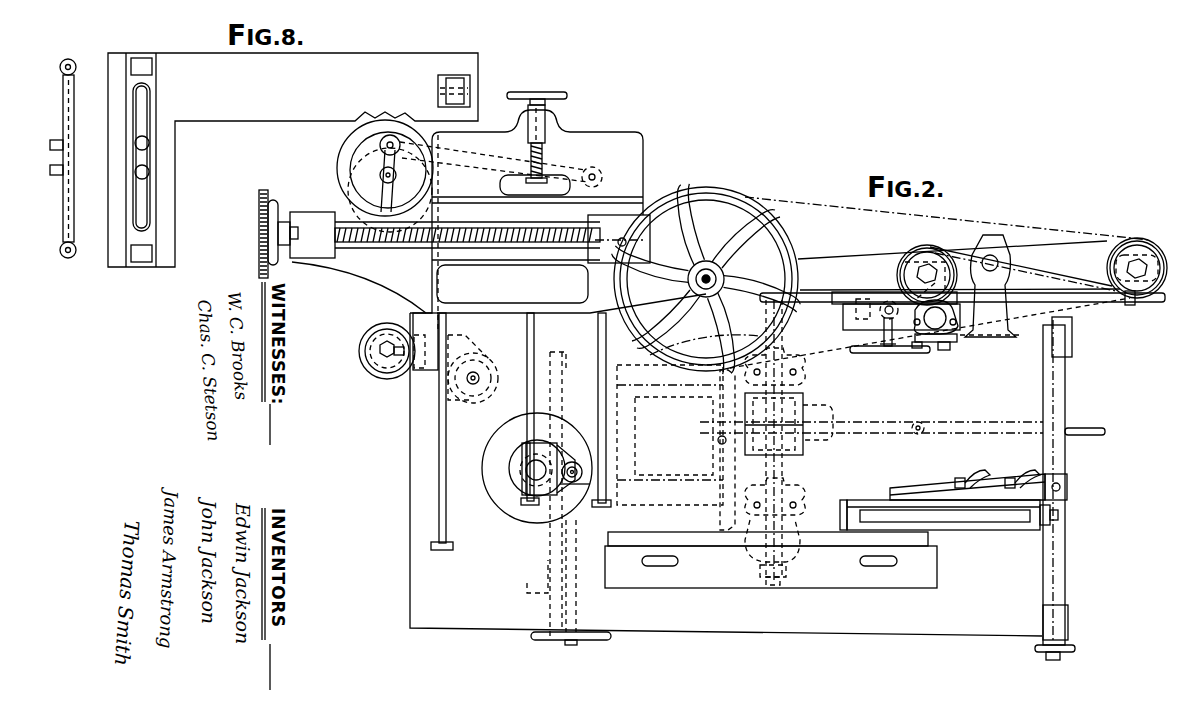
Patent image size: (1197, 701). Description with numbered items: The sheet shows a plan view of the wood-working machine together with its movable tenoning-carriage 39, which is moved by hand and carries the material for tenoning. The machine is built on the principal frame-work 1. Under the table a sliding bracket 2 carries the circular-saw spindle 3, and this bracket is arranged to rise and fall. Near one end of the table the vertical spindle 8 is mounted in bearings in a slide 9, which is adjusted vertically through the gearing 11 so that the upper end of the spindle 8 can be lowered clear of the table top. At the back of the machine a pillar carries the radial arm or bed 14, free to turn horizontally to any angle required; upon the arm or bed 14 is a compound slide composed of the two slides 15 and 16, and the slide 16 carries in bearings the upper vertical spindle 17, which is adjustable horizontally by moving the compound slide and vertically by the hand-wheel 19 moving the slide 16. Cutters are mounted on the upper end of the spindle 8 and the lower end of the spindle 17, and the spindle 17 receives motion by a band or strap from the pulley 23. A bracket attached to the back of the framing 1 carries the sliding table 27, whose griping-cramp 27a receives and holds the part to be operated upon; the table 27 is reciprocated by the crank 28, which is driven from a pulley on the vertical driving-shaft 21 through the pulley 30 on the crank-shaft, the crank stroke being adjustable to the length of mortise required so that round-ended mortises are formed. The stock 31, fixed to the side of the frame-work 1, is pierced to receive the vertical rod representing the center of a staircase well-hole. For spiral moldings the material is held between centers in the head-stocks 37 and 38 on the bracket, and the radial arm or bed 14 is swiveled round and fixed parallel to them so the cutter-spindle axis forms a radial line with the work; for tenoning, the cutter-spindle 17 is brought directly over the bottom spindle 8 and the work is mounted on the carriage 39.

In FIG. 2, the principal frame-work 1 is at (836, 529).
In FIG. 2, the sliding bracket 2 is at (783, 494).
In FIG. 2, the circular-saw spindle 3 is at (789, 434).
In FIG. 2, the vertical spindle 8 is at (536, 470).
In FIG. 2, the slide 9 is at (537, 468).
In FIG. 2, the gearing 11 is at (578, 473).
In FIG. 2, the radial arm or bed 14 is at (947, 282).
In FIG. 2, the slide 15 is at (894, 297).
In FIG. 2, the slide 16 is at (901, 314).
In FIG. 2, the vertical spindle 17 is at (935, 330).
In FIG. 2, the hand-wheel 19 is at (890, 344).
In FIG. 2, the vertical driving-shaft 21 is at (706, 279).
In FIG. 2, the pulley 23 is at (706, 279).
In FIG. 2, the sliding table 27 is at (521, 220).
In FIG. 2, the griping-cramp 27a is at (545, 153).
In FIG. 2, the crank 28 is at (381, 173).
In FIG. 2, the pulley 30 is at (378, 176).
In FIG. 2, the stock 31 is at (990, 286).
In FIG. 2, the head-stock 37 is at (429, 234).
In FIG. 2, the head-stock 38 is at (619, 239).
In FIG. 8, the carriage 39 is at (293, 160).